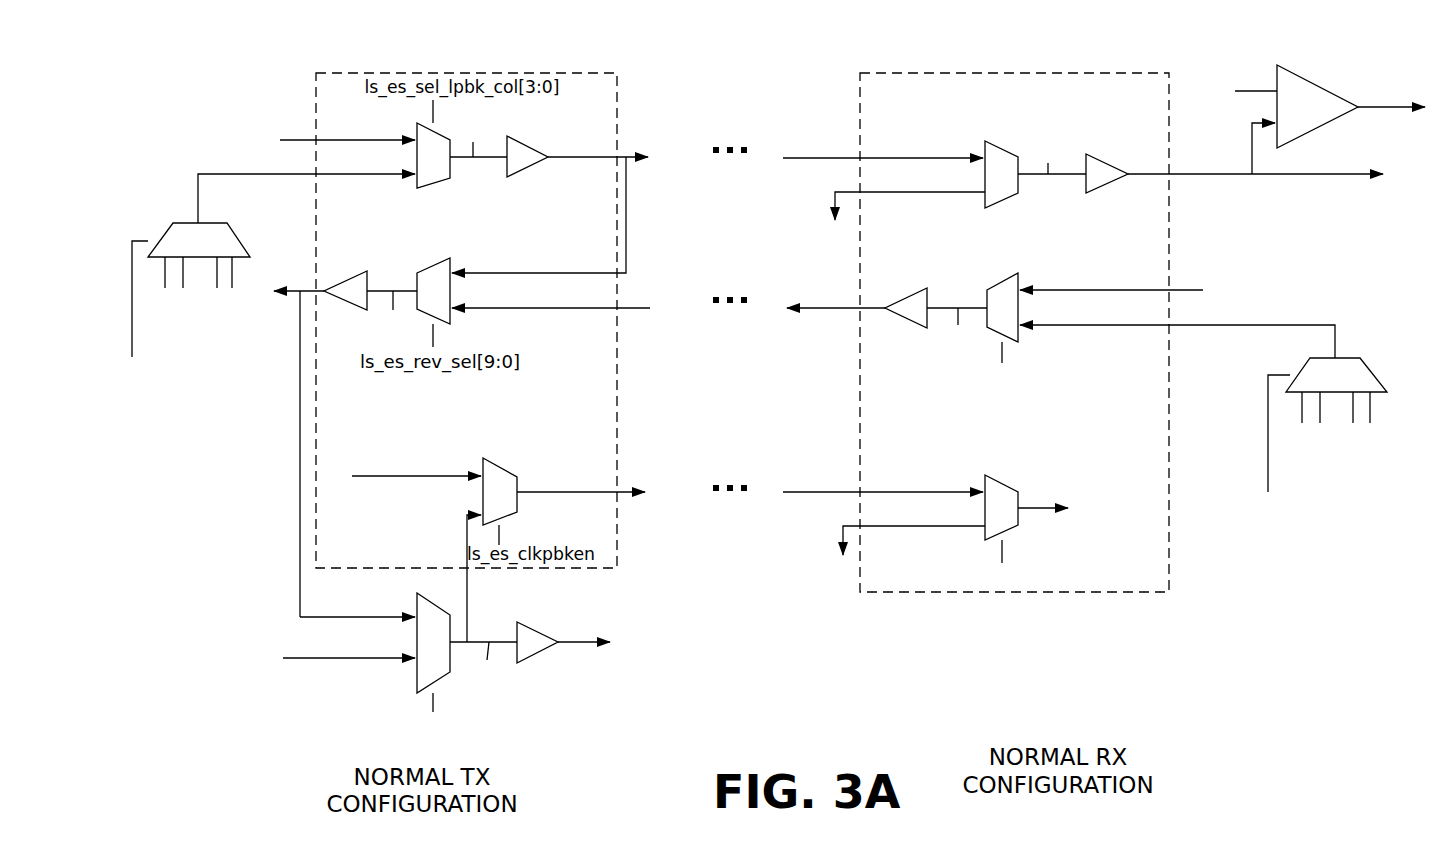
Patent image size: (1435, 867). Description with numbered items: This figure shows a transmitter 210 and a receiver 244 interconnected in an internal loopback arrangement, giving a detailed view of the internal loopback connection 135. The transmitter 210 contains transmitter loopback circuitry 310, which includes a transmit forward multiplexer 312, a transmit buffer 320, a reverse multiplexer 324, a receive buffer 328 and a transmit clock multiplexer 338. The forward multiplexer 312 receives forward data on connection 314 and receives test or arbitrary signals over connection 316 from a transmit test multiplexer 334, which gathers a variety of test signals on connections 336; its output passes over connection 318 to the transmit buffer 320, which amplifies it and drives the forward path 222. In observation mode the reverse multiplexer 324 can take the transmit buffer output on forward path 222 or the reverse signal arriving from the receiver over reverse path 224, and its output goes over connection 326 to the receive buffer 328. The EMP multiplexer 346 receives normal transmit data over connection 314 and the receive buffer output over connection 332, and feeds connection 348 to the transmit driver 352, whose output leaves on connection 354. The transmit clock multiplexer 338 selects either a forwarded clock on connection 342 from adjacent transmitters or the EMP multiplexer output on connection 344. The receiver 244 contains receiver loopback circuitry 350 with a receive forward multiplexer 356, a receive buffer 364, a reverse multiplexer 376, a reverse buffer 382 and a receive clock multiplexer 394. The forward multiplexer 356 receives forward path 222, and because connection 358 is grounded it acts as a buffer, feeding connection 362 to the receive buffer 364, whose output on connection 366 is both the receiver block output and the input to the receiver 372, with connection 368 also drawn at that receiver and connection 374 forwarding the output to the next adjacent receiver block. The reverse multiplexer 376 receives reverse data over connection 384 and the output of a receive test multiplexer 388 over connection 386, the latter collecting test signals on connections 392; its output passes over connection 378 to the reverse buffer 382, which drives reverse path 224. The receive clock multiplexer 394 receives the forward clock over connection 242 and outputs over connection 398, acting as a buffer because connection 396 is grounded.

The internal loopback connection 135 is at (183, 92).
The transmitter 210 is at (390, 56).
The transmitter loopback circuitry 310 is at (547, 421).
The transmit forward multiplexer 312 is at (433, 188).
The connection 314 is at (328, 143).
The connection 316 is at (307, 177).
The connection 318 is at (478, 134).
The transmit buffer 320 is at (523, 140).
The forward path 222 is at (626, 155).
The reverse path 224 is at (630, 308).
The connection 242 is at (625, 492).
The reverse multiplexer 324 is at (430, 266).
The connection 326 is at (392, 314).
The receive buffer 328 is at (357, 308).
The connection 332 is at (320, 288).
The transmit test multiplexer 334 is at (238, 237).
The connections 336 is at (201, 318).
The transmit clock multiplexer 338 is at (500, 518).
The connection 342 is at (422, 477).
The connection 344 is at (467, 572).
The EMP multiplexer 346 is at (430, 598).
The connection 348 is at (483, 668).
The transmit driver 352 is at (530, 625).
The connection 354 is at (578, 645).
The receiver 244 is at (1026, 51).
The receiver loopback circuitry 350 is at (1098, 441).
The receive forward multiplexer 356 is at (1000, 143).
The connection 358 is at (822, 212).
The connection 362 is at (1052, 157).
The receive buffer 364 is at (1093, 158).
The connection 366 is at (1188, 175).
The receiver input line 368 is at (1260, 90).
The receiver 372 is at (1319, 83).
The connection 374 is at (1370, 108).
The reverse multiplexer 376 is at (1003, 284).
The connection 378 is at (957, 331).
The reverse buffer 382 is at (925, 295).
The connection 384 is at (1070, 292).
The connection 386 is at (1205, 325).
The receive test multiplexer 388 is at (1377, 375).
The connections 392 is at (1350, 452).
The receive clock multiplexer 394 is at (1000, 480).
The connection 396 is at (833, 534).
The connection 398 is at (1035, 510).